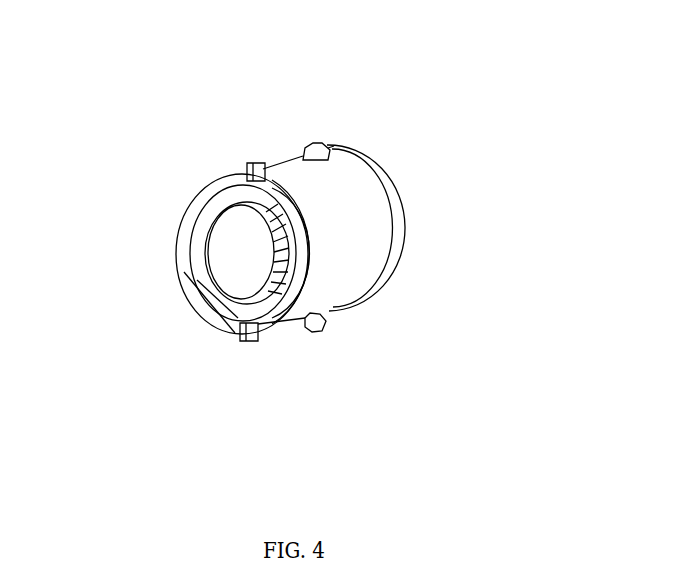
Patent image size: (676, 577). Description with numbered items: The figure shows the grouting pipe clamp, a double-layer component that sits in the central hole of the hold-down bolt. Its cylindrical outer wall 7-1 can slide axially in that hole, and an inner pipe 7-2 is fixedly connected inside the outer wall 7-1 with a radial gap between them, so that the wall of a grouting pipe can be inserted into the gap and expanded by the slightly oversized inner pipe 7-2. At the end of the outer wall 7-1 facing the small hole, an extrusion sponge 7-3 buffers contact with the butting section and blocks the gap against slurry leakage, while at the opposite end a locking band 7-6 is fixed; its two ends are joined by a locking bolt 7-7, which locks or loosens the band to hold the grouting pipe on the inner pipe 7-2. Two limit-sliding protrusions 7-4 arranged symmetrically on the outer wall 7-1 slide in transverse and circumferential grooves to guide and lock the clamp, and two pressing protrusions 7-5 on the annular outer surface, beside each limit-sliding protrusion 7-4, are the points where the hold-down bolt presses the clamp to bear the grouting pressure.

The outer wall 7-1 is at (288, 177).
The inner pipe 7-2 is at (255, 306).
The extrusion sponge 7-3 is at (403, 200).
The limit-sliding protrusion 7-4 is at (310, 143).
The pressing protrusion 7-5 is at (252, 341).
The locking band 7-6 is at (200, 288).
The locking bolt 7-7 is at (238, 172).